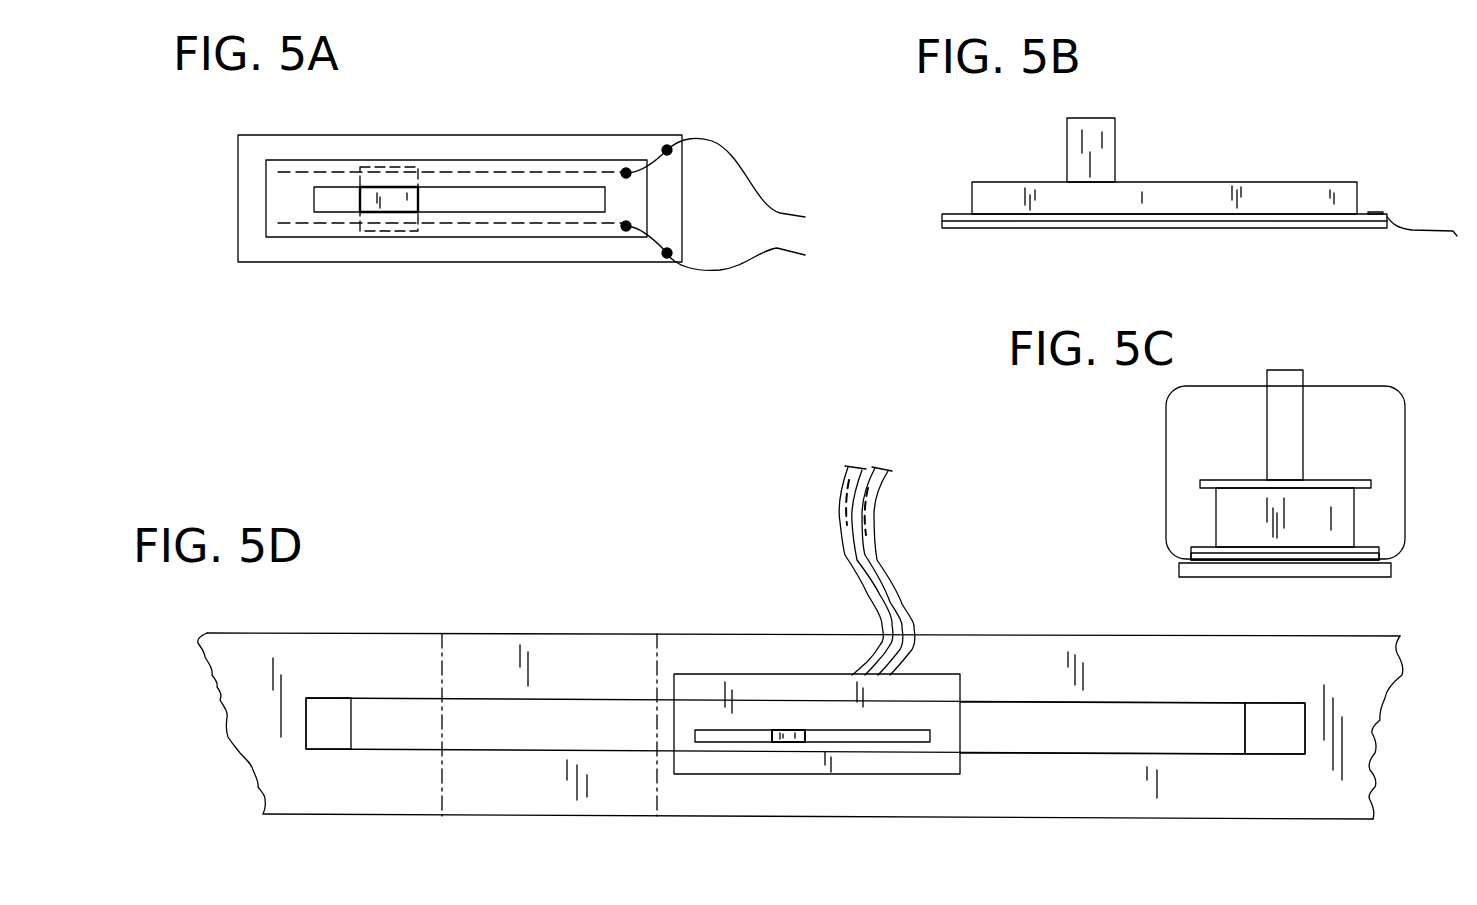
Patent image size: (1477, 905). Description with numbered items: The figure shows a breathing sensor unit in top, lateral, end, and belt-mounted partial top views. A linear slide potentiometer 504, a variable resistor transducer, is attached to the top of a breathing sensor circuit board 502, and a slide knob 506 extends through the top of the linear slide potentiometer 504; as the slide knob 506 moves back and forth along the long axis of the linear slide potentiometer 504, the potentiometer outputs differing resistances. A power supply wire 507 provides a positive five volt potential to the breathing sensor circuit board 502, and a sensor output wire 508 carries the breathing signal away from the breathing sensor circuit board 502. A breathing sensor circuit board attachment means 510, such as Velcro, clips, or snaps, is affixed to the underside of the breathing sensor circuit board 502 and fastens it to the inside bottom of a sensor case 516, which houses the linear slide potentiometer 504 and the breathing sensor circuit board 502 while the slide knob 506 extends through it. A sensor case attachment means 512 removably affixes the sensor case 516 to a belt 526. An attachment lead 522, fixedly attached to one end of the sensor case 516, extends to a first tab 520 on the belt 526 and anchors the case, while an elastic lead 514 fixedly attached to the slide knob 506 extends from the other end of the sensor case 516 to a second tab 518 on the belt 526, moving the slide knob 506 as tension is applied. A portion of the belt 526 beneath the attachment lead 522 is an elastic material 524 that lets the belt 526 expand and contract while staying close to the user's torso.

In FIG. 5A, the breathing sensor circuit board 502 is at (248, 229).
In FIG. 5B, the breathing sensor circuit board 502 is at (960, 213).
In FIG. 5C, the breathing sensor circuit board 502 is at (1390, 552).
In FIG. 5A, the linear slide potentiometer 504 is at (573, 240).
In FIG. 5B, the linear slide potentiometer 504 is at (1220, 182).
In FIG. 5C, the linear slide potentiometer 504 is at (1354, 520).
In FIG. 5A, the slide knob 506 is at (400, 193).
In FIG. 5B, the slide knob 506 is at (1115, 162).
In FIG. 5C, the slide knob 506 is at (1285, 370).
In FIG. 5D, the slide knob 506 is at (793, 742).
In FIG. 5A, the power supply wire 507 is at (782, 211).
In FIG. 5B, the power supply wire 507 is at (1424, 187).
In FIG. 5D, the power supply wire 507 is at (838, 530).
In FIG. 5A, the sensor output wire 508 is at (772, 252).
In FIG. 5B, the sensor output wire 508 is at (1440, 230).
In FIG. 5D, the sensor output wire 508 is at (872, 495).
In FIG. 5B, the breathing sensor circuit board attachment means 510 is at (1243, 228).
In FIG. 5C, the breathing sensor circuit board attachment means 510 is at (1191, 552).
In FIG. 5C, the sensor case attachment means 512 is at (1283, 577).
In FIG. 5C, the elastic lead 514 is at (1331, 480).
In FIG. 5D, the elastic lead 514 is at (1160, 730).
In FIG. 5C, the sensor case 516 is at (1405, 447).
In FIG. 5D, the sensor case 516 is at (707, 758).
In FIG. 5D, the second tab 518 is at (1277, 735).
In FIG. 5D, the first tab 520 is at (332, 710).
In FIG. 5D, the attachment lead 522 is at (487, 713).
In FIG. 5D, the elastic material 524 is at (542, 790).
In FIG. 5D, the belt 526 is at (382, 797).